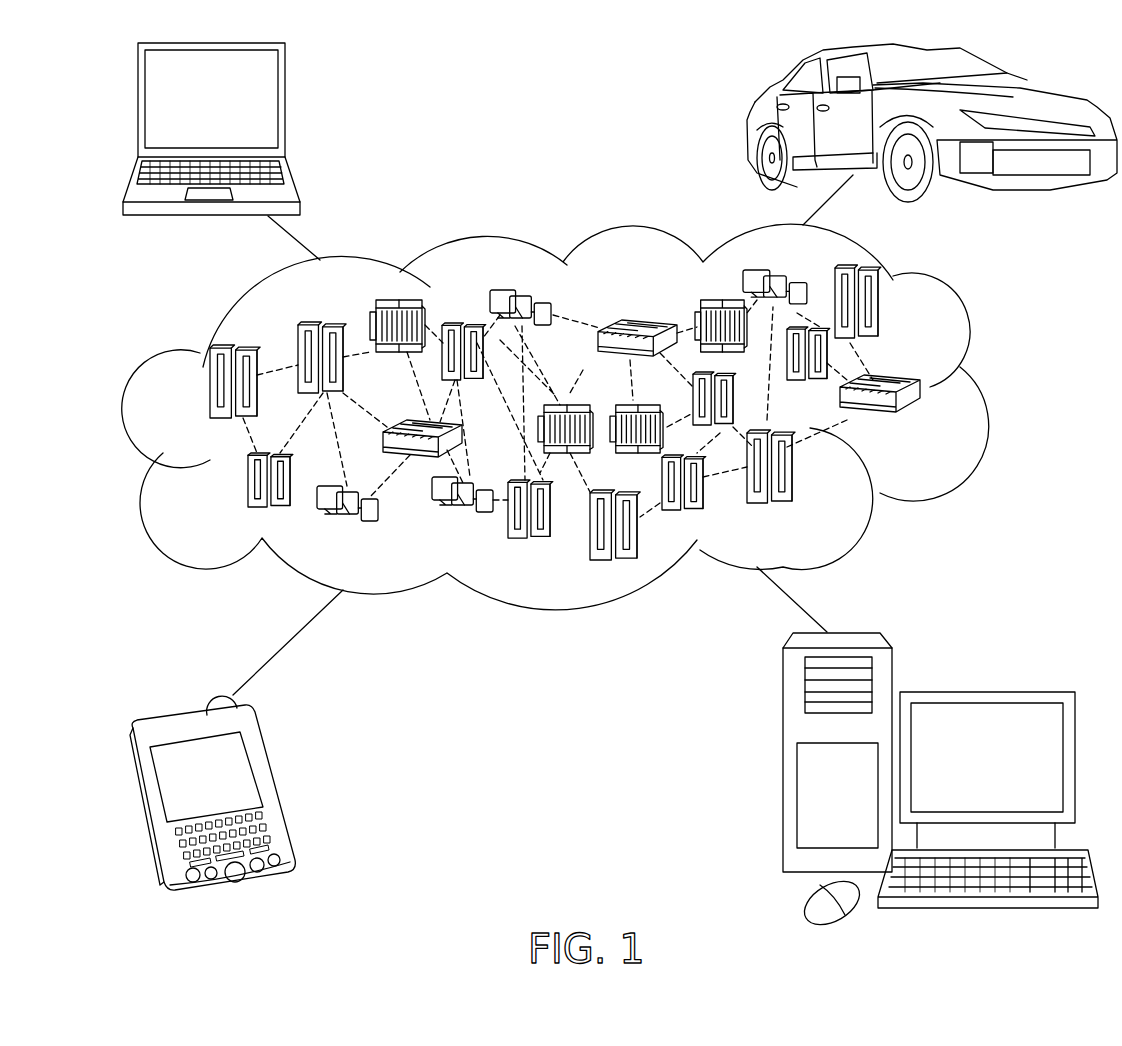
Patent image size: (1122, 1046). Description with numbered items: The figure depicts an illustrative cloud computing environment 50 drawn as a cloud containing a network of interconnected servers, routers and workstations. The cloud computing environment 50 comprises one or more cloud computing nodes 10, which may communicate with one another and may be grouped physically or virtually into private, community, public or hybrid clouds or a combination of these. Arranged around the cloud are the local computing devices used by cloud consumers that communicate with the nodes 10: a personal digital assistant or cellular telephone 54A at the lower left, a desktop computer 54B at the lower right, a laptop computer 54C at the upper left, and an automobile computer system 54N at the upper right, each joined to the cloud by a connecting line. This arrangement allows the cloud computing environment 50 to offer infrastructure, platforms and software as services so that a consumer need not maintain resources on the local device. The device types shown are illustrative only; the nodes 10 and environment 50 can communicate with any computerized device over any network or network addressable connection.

The cloud computing node 10 is at (927, 425).
The cloud computing environment 50 is at (584, 417).
The personal digital assistant or cellular telephone 54A is at (277, 788).
The desktop computer 54B is at (988, 690).
The laptop computer 54C is at (285, 107).
The automobile computer system 54N is at (750, 122).